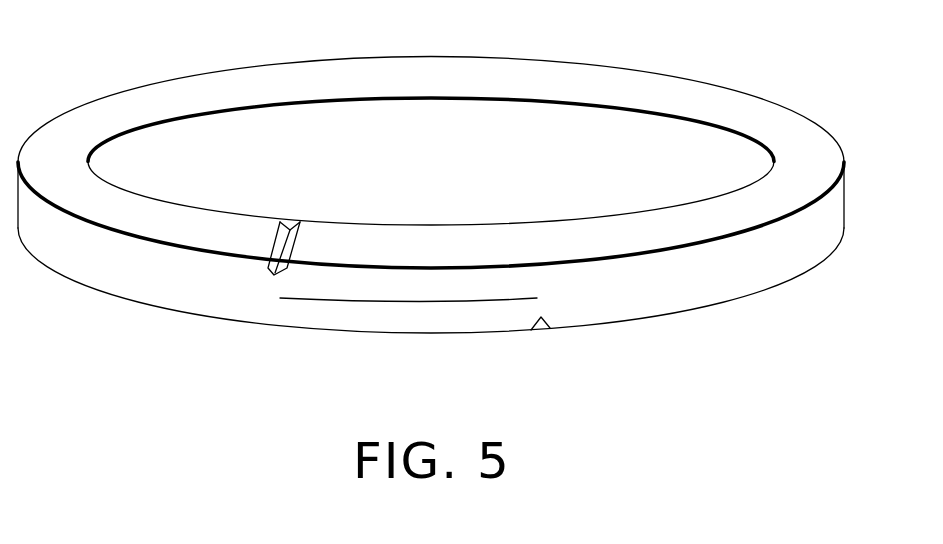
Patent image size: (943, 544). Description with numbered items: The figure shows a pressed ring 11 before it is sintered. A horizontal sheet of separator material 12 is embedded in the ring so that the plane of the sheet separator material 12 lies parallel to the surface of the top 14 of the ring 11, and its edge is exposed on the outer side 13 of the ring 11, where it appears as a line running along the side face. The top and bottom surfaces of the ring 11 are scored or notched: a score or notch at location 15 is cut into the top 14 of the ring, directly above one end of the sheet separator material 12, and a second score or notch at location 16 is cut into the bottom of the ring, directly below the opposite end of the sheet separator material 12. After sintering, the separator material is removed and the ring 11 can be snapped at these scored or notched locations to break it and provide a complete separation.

The pressed ring 11 is at (431, 191).
The sheet separator material 12 is at (382, 302).
The outer side 13 is at (142, 279).
The top 14 is at (137, 97).
The score or notch location on top 15 is at (291, 222).
The score or notch location on bottom 16 is at (541, 331).